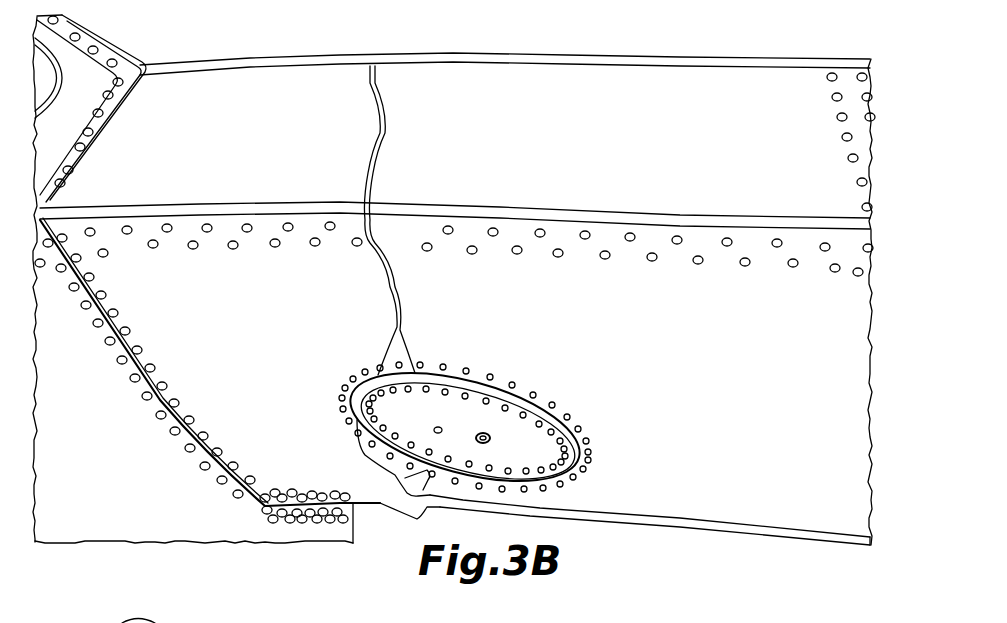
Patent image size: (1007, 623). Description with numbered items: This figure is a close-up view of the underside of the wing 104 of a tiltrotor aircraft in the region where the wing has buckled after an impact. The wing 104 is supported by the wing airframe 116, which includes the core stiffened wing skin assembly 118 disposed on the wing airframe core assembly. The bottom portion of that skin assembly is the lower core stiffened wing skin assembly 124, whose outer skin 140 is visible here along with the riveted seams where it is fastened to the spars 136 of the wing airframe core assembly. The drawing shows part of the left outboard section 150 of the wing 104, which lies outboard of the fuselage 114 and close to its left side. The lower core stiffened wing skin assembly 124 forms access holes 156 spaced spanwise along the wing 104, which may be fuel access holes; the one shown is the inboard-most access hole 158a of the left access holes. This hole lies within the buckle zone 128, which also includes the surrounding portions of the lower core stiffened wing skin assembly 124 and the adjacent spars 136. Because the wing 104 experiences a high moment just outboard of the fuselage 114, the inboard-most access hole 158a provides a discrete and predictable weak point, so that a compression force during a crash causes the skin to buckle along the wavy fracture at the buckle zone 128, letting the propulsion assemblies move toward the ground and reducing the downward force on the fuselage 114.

The wing 104 is at (645, 80).
The fuselage 114 is at (95, 520).
The wing airframe 116 is at (455, 215).
The core stiffened wing skin assembly 118 is at (803, 515).
The lower core stiffened wing skin assembly 124 is at (755, 493).
The buckle zone 128 is at (374, 295).
The spars 136 is at (530, 90).
The outer skin 140 is at (655, 485).
The left outboard section 150 is at (725, 90).
The access holes 156 is at (513, 397).
The inboard-most access hole 158a is at (532, 400).